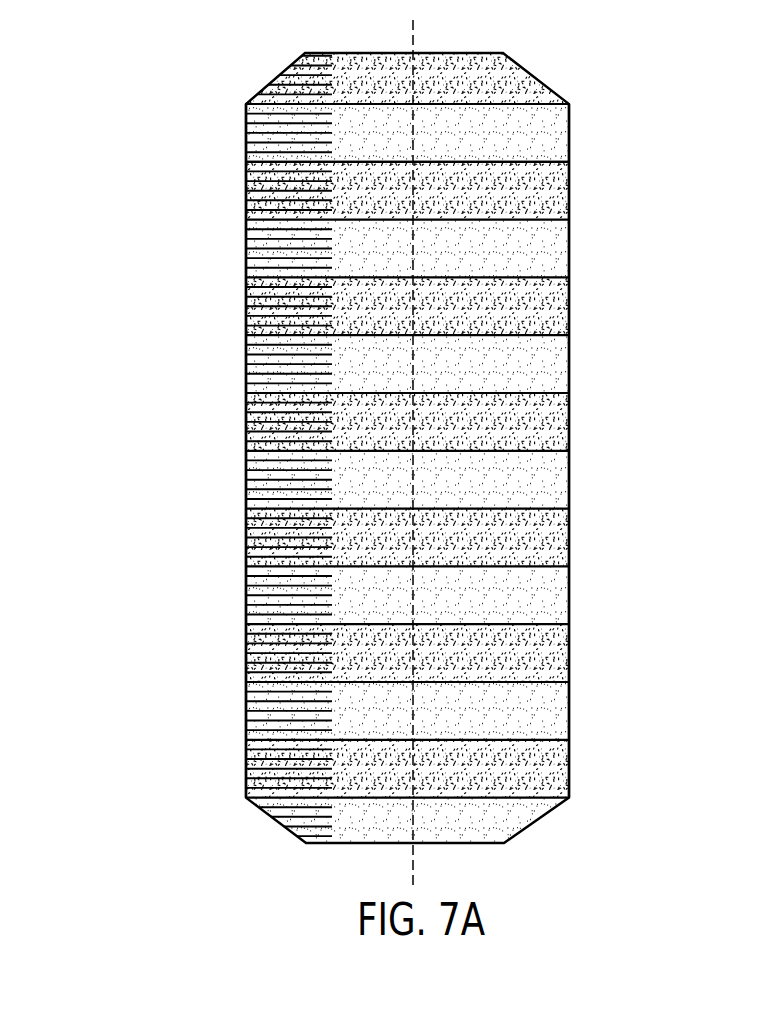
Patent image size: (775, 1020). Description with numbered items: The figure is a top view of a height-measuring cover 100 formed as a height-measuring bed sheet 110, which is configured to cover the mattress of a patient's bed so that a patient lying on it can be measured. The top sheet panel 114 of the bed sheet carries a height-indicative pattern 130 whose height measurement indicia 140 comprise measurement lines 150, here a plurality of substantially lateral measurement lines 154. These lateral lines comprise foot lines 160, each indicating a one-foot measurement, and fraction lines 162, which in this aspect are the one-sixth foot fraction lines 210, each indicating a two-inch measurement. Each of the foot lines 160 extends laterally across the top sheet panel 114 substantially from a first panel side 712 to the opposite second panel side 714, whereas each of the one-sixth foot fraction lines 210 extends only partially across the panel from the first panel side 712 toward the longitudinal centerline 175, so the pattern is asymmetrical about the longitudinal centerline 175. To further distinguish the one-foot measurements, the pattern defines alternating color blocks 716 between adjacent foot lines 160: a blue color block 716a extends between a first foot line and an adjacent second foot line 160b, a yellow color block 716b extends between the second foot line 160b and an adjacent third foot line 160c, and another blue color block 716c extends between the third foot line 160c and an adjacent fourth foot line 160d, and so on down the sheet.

The height-measuring cover 100 is at (362, 431).
The height-measuring bed sheet 110 is at (218, 125).
The top sheet panel 114 is at (523, 653).
The height-indicative pattern 130 is at (354, 448).
The height measurement indicia 140 is at (350, 595).
The measurement lines 150 is at (248, 648).
The substantially lateral measurement lines 154 is at (283, 717).
The foot lines 160 is at (538, 158).
The second foot line 160b is at (540, 217).
The third foot line 160c is at (540, 275).
The fourth foot line 160d is at (540, 335).
The fraction lines 162 is at (232, 248).
The longitudinal centerline 175 is at (415, 45).
The one-sixth foot fraction lines 210 is at (268, 248).
The first panel side 712 is at (246, 374).
The second panel side 714 is at (570, 420).
The alternating color blocks 716 is at (497, 132).
The blue color block 716a is at (523, 192).
The yellow color block 716b is at (523, 248).
The blue color block 716c is at (523, 307).